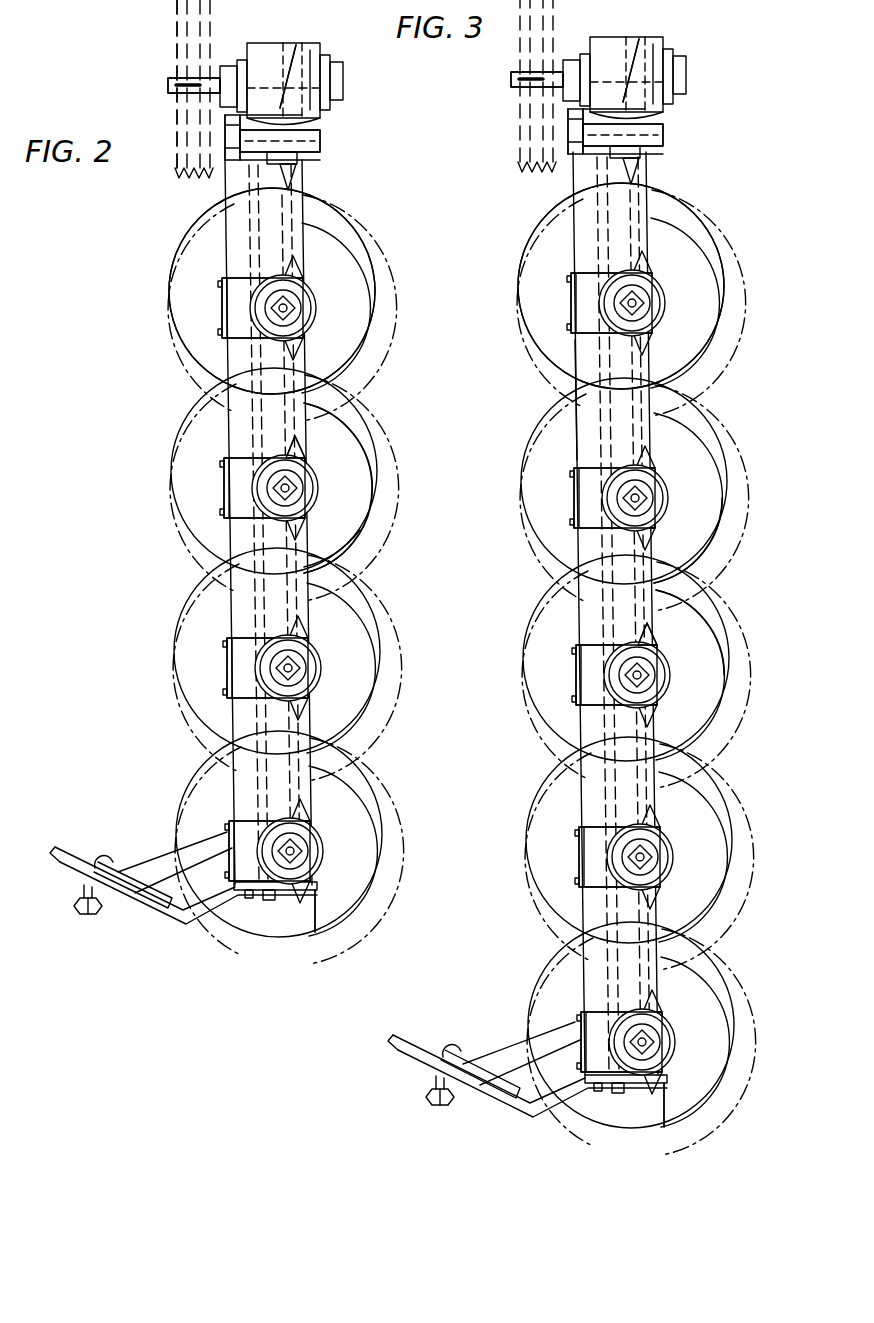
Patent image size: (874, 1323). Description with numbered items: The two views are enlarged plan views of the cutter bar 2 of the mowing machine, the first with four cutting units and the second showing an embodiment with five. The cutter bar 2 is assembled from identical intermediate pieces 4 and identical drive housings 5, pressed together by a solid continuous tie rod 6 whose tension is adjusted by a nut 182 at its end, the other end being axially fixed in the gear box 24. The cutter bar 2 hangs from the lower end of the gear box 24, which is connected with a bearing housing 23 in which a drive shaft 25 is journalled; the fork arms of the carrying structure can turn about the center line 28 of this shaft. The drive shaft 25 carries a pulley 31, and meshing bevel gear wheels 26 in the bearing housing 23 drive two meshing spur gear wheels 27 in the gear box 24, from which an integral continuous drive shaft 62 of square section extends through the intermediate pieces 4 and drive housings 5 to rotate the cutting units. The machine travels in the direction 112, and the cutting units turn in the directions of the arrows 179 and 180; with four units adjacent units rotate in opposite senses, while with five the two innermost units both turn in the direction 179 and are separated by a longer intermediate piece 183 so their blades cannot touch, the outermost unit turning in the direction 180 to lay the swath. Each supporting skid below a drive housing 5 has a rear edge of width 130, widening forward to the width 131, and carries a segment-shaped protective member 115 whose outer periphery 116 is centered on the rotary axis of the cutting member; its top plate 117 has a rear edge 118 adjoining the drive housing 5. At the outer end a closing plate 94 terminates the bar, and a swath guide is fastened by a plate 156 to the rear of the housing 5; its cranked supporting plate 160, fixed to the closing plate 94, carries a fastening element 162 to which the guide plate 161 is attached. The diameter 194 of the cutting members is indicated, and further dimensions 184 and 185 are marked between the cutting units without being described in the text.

In FIG. 2, the cutter bar 2 is at (365, 252).
In FIG. 3, the cutter bar 2 is at (730, 225).
In FIG. 2, the intermediate piece 4 is at (222, 195).
In FIG. 3, the intermediate piece 4 is at (572, 190).
In FIG. 2, the drive housing 5 is at (240, 298).
In FIG. 3, the drive housing 5 is at (590, 290).
In FIG. 2, the tie rod 6 is at (249, 902).
In FIG. 3, the tie rod 6 is at (597, 1094).
In FIG. 2, the bearing housing 23 is at (262, 50).
In FIG. 3, the bearing housing 23 is at (612, 45).
In FIG. 2, the gear box 24 is at (318, 158).
In FIG. 3, the gear box 24 is at (663, 153).
In FIG. 2, the drive shaft 25 is at (168, 92).
In FIG. 3, the drive shaft 25 is at (515, 90).
In FIG. 2, the bevel gear wheels 26 is at (292, 58).
In FIG. 3, the bevel gear wheels 26 is at (628, 66).
In FIG. 2, the spur gear wheels 27 is at (322, 138).
In FIG. 3, the spur gear wheels 27 is at (670, 132).
In FIG. 2, the center line 28 is at (156, 87).
In FIG. 3, the center line 28 is at (490, 80).
In FIG. 2, the pulley 31 is at (176, 173).
In FIG. 2, the drive shaft 62 is at (305, 214).
In FIG. 3, the drive shaft 62 is at (660, 212).
In FIG. 2, the closing plate 94 is at (322, 888).
In FIG. 3, the closing plate 94 is at (674, 1080).
In FIG. 2, the direction of travel 112 is at (417, 128).
In FIG. 3, the direction of travel 112 is at (757, 128).
In FIG. 2, the protective member 115 is at (376, 522).
In FIG. 3, the protective member 115 is at (724, 533).
In FIG. 2, the outer periphery 116 is at (355, 423).
In FIG. 3, the outer periphery 116 is at (717, 637).
In FIG. 2, the plate 117 is at (350, 533).
In FIG. 2, the rear edge 118 is at (320, 450).
In FIG. 3, the rear edge 118 is at (672, 631).
In FIG. 2, the width 130 is at (212, 338).
In FIG. 2, the width 131 is at (305, 258).
In FIG. 2, the plate 156 is at (140, 860).
In FIG. 3, the plate 156 is at (508, 1063).
In FIG. 2, the cranked supporting plate 160 is at (207, 913).
In FIG. 3, the cranked supporting plate 160 is at (548, 1110).
In FIG. 2, the guide plate 161 is at (80, 882).
In FIG. 3, the guide plate 161 is at (438, 1068).
In FIG. 2, the fastening element 162 is at (147, 912).
In FIG. 3, the fastening element 162 is at (505, 1096).
In FIG. 2, the direction of rotation 179 is at (407, 335).
In FIG. 3, the direction of rotation 179 is at (755, 330).
In FIG. 2, the direction of rotation 180 is at (409, 462).
In FIG. 3, the direction of rotation 180 is at (759, 649).
In FIG. 2, the nut 182 is at (270, 904).
In FIG. 3, the nut 182 is at (618, 1096).
In FIG. 3, the intermediate piece 183 is at (582, 368).
In FIG. 3, the cutter spacing dimension 184 is at (571, 333).
In FIG. 2, the cutter spacing dimension 185 is at (224, 345).
In FIG. 3, the diameter 194 is at (575, 563).